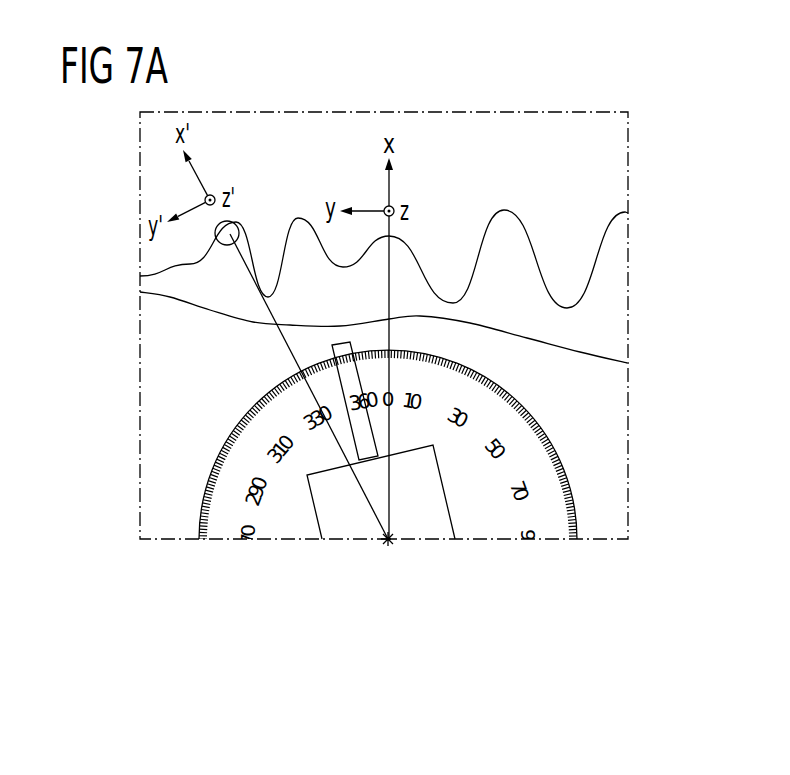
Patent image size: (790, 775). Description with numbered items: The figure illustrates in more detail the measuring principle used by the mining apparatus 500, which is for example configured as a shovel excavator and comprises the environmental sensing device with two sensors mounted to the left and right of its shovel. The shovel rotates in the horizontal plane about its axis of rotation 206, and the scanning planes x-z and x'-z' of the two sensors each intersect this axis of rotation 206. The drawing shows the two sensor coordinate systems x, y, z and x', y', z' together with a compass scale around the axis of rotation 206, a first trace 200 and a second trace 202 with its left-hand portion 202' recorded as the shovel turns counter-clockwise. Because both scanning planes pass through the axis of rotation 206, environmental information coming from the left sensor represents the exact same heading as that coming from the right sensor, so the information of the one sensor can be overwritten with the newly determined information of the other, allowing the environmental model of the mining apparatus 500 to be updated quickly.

The first surface profile curve 200 is at (527, 234).
The second surface profile curve 202 is at (538, 348).
The left portion of second profile curve 202' is at (231, 303).
The axis of rotation 206 is at (388, 540).
The mining apparatus 500 is at (360, 519).